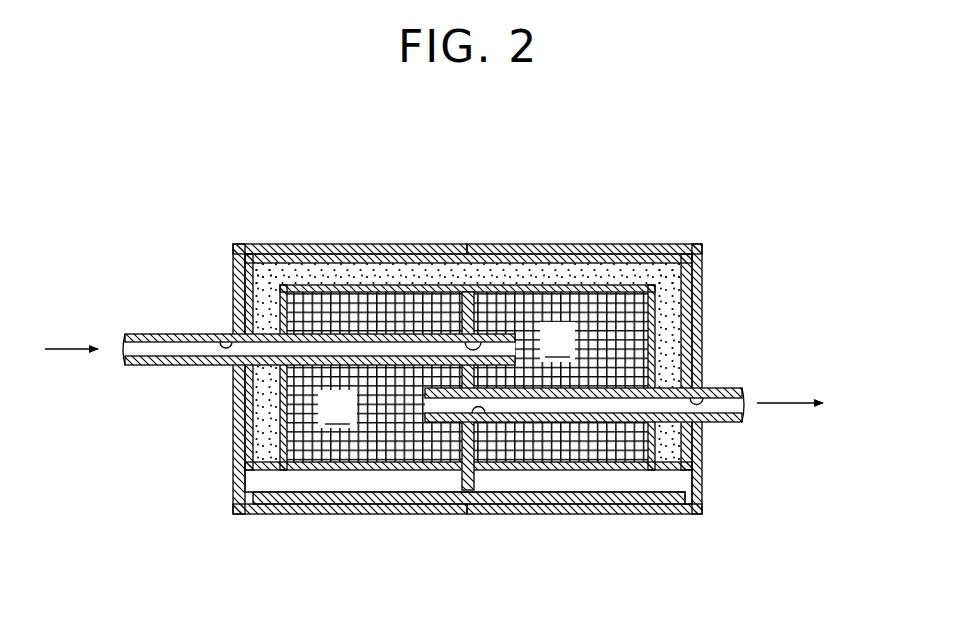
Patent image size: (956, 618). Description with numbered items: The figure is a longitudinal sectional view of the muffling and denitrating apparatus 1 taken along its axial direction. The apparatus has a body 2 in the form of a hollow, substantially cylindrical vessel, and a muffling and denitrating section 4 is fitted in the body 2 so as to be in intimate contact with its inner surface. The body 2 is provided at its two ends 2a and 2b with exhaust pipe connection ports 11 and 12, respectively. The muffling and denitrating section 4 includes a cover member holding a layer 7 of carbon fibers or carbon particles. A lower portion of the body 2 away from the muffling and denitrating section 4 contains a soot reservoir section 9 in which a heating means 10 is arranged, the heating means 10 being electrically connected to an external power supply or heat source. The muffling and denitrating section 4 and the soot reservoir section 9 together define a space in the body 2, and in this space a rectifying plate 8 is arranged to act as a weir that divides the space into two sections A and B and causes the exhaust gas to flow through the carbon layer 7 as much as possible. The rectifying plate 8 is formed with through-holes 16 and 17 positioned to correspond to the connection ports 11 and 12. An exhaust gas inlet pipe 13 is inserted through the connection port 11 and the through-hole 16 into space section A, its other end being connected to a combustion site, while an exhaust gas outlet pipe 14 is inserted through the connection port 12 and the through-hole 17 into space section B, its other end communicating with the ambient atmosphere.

The muffling and denitrating apparatus 1 is at (441, 358).
The body 2 is at (492, 330).
The end of the body 2a is at (237, 278).
The end of the body 2b is at (697, 337).
The muffling and denitrating section 4 is at (467, 316).
The layer of carbon fibers or carbon particles 7 is at (657, 277).
The rectifying plate 8 is at (457, 447).
The soot reservoir section 9 is at (270, 478).
The heating means 10 is at (300, 506).
The exhaust pipe connection port 11 is at (222, 334).
The exhaust pipe connection port 12 is at (705, 388).
The exhaust gas inlet pipe 13 is at (165, 333).
The exhaust gas outlet pipe 14 is at (715, 422).
The through-hole 16 is at (474, 338).
The through-hole 17 is at (485, 416).